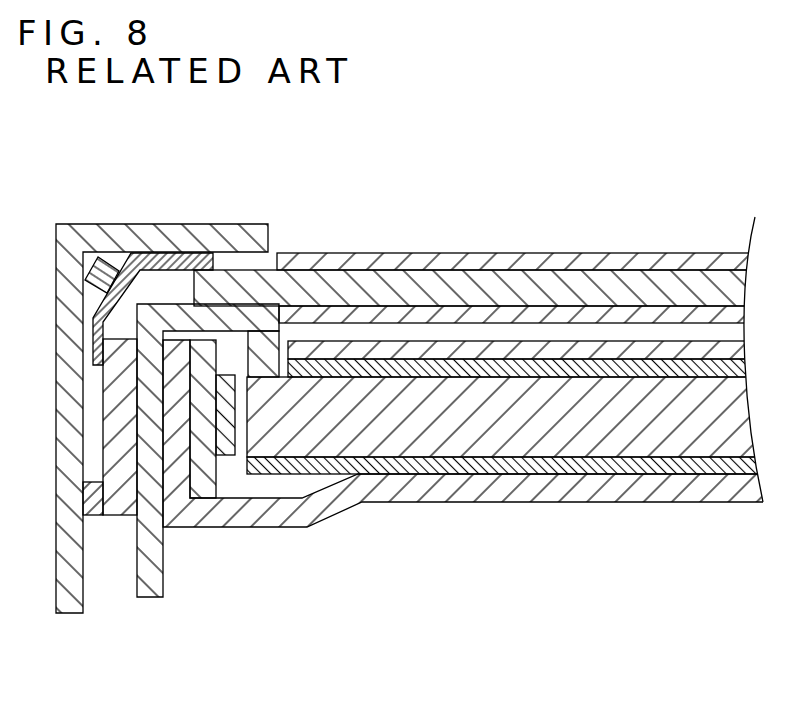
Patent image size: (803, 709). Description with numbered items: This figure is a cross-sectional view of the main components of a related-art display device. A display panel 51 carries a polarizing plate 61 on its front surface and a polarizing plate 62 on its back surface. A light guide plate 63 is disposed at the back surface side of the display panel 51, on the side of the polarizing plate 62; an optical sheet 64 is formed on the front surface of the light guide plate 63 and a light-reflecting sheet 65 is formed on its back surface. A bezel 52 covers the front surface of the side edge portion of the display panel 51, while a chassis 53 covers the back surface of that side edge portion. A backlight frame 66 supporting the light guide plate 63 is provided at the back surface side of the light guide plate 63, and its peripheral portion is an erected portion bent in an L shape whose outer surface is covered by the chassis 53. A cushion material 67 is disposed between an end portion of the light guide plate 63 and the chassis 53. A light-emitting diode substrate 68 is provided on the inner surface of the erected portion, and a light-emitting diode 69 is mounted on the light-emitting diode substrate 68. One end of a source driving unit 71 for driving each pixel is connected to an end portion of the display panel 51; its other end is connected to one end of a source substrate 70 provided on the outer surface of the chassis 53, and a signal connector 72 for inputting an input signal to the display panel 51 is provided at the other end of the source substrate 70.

The display panel 51 is at (430, 292).
The bezel 52 is at (220, 235).
The chassis 53 is at (178, 310).
The polarizing plate 61 is at (482, 262).
The polarizing plate 62 is at (372, 312).
The light guide plate 63 is at (548, 440).
The optical sheet 64 is at (600, 348).
The light-reflecting sheet 65 is at (640, 476).
The backlight frame 66 is at (330, 508).
The cushion material 67 is at (282, 336).
The light-emitting diode substrate 68 is at (205, 473).
The light-emitting diode 69 is at (225, 448).
The source substrate 70 is at (120, 497).
The source driving unit 71 is at (117, 256).
The signal connector 72 is at (93, 515).